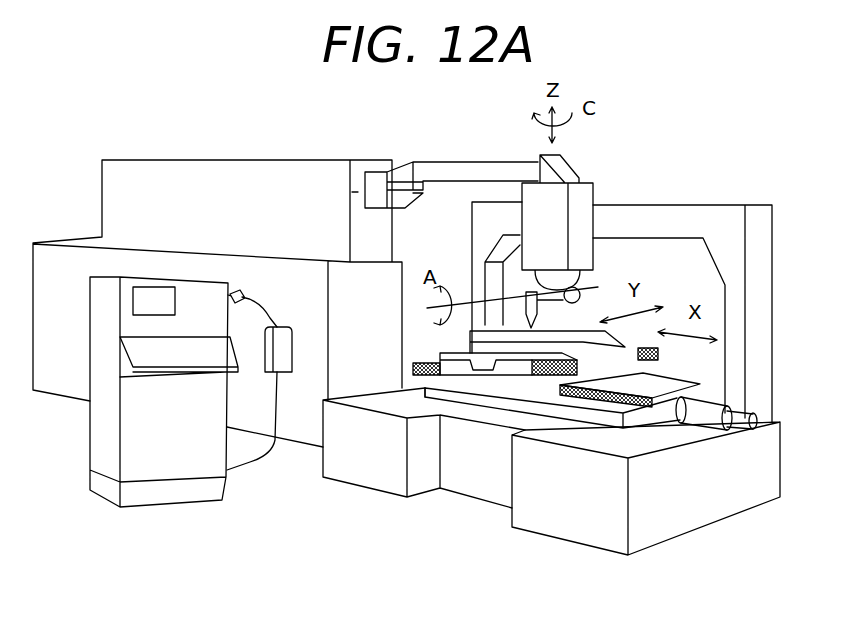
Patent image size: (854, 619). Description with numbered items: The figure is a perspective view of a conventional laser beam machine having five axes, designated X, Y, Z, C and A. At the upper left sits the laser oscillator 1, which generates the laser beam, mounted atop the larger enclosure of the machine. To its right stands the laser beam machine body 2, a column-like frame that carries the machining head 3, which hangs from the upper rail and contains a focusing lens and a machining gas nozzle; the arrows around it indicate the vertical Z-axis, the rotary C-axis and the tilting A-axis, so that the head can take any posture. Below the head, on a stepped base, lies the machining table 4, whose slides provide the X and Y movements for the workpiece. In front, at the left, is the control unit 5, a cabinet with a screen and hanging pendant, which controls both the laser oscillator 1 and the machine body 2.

The laser oscillator 1 is at (268, 172).
The laser beam machine body 2 is at (648, 218).
The machining head 3 is at (616, 324).
The machining table 4 is at (623, 360).
The control unit 5 is at (90, 433).